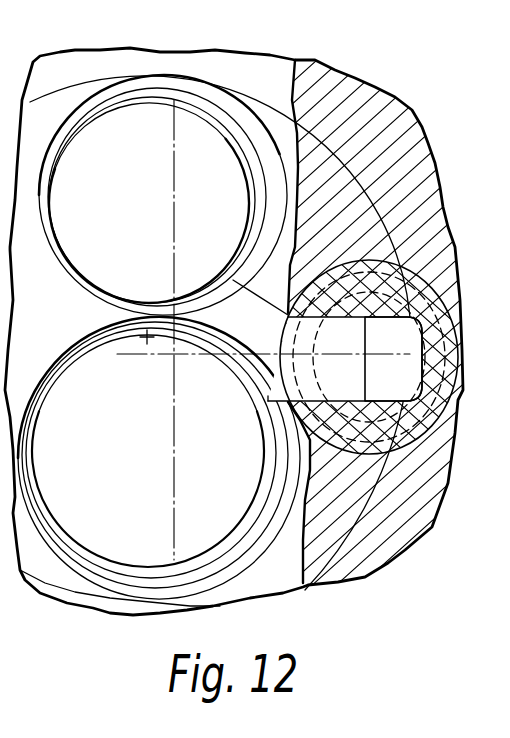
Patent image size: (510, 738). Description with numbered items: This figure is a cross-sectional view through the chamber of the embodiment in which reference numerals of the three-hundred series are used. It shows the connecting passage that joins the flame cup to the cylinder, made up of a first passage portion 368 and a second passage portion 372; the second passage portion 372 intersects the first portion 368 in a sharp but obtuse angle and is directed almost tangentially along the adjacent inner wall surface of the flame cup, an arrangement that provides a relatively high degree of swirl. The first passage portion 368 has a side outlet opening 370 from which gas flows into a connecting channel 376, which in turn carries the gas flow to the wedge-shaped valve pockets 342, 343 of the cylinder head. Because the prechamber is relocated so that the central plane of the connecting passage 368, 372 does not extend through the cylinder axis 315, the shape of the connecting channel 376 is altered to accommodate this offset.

The valve pocket 343 is at (183, 120).
The valve pocket 342 is at (200, 537).
The connecting channel 376 is at (230, 297).
The side outlet opening 370 is at (287, 324).
The second passage portion 372 is at (390, 327).
The first passage portion 368 is at (347, 322).
The cylinder axis 315 is at (145, 342).